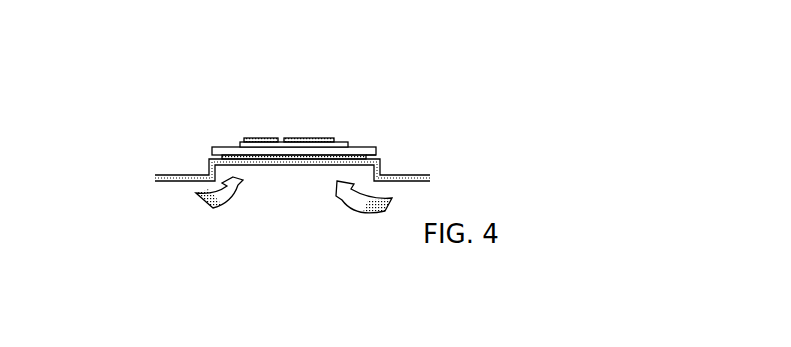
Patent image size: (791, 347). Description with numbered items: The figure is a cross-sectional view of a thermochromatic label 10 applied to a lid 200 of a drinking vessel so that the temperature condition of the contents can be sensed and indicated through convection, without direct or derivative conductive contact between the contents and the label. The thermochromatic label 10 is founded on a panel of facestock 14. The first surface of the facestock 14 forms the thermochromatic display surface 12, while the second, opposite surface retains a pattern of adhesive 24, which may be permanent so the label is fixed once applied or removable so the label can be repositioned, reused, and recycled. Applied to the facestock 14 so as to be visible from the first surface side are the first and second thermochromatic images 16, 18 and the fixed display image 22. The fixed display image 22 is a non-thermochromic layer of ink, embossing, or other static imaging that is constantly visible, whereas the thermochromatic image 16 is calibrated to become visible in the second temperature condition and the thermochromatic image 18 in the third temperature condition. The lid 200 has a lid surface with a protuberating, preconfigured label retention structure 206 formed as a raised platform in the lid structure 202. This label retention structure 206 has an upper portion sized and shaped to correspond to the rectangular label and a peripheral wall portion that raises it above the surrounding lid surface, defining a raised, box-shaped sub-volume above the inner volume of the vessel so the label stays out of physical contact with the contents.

The thermochromatic label 10 is at (250, 97).
The thermochromatic display surface 12 is at (215, 148).
The facestock 14 is at (220, 155).
The thermochromatic image 16 is at (302, 138).
The thermochromatic image 18 is at (240, 145).
The fixed display image 22 is at (388, 98).
The adhesive 24 is at (372, 155).
The lid 200 is at (248, 198).
The lid structure 202 is at (188, 182).
The label retention structure 206 is at (309, 165).